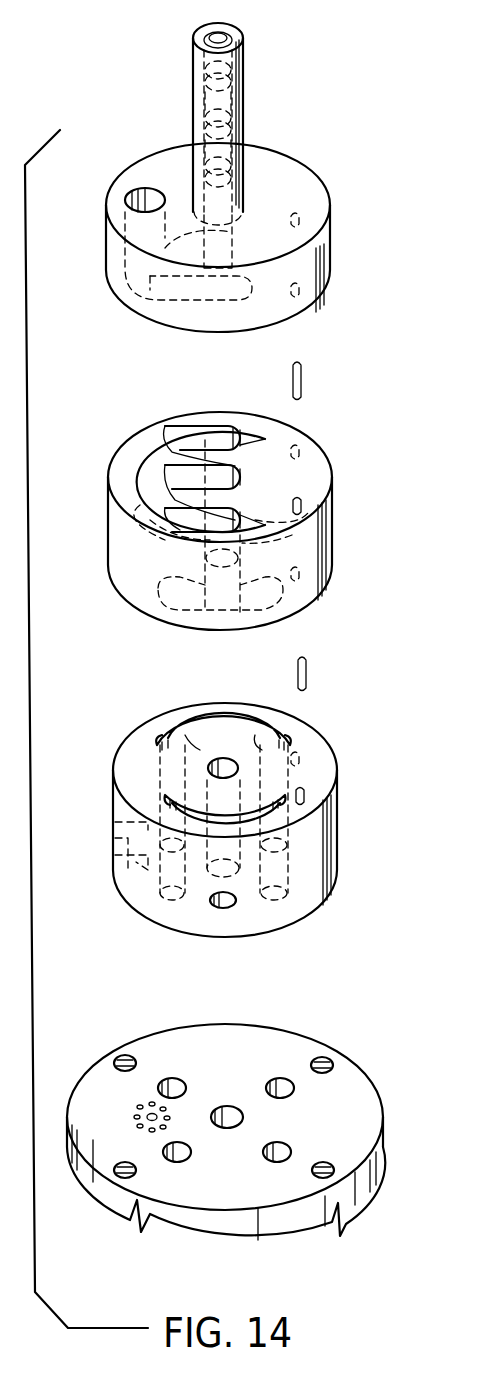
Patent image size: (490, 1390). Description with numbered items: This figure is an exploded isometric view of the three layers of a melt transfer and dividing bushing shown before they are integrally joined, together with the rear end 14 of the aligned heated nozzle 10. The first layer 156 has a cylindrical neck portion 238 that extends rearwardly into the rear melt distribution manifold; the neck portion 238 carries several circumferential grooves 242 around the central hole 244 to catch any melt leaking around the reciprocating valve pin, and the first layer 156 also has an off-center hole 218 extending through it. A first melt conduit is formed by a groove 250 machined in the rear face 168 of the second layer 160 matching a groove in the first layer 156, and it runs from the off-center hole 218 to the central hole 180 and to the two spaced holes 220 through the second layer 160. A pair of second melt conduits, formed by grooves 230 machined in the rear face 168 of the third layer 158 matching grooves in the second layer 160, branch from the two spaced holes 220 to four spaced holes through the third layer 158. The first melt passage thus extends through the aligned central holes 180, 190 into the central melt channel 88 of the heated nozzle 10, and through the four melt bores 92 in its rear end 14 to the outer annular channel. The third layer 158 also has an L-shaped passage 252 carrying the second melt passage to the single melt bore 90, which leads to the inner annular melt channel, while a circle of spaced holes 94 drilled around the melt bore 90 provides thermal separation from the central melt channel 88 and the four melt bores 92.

The heated nozzle 10 is at (386, 1168).
The rear end 14 is at (362, 1100).
The central melt channel 88 is at (228, 1110).
The single melt bore 90 is at (148, 1115).
The melt bores 92 is at (283, 1082).
The spaced holes 94 is at (150, 1106).
The first layer 156 is at (333, 253).
The third layer 158 is at (333, 836).
The second layer 160 is at (316, 540).
The rear face 168 is at (326, 461).
The central hole 180 is at (236, 465).
The central hole 190 is at (216, 768).
The off-center hole 218 is at (150, 193).
The spaced holes 220 is at (218, 430).
The grooves 230 is at (207, 722).
The cylindrical neck portion 238 is at (244, 97).
The circumferential grooves 242 is at (226, 126).
The central hole 244 is at (224, 36).
The groove 250 is at (160, 455).
The L-shaped passage 252 is at (130, 825).